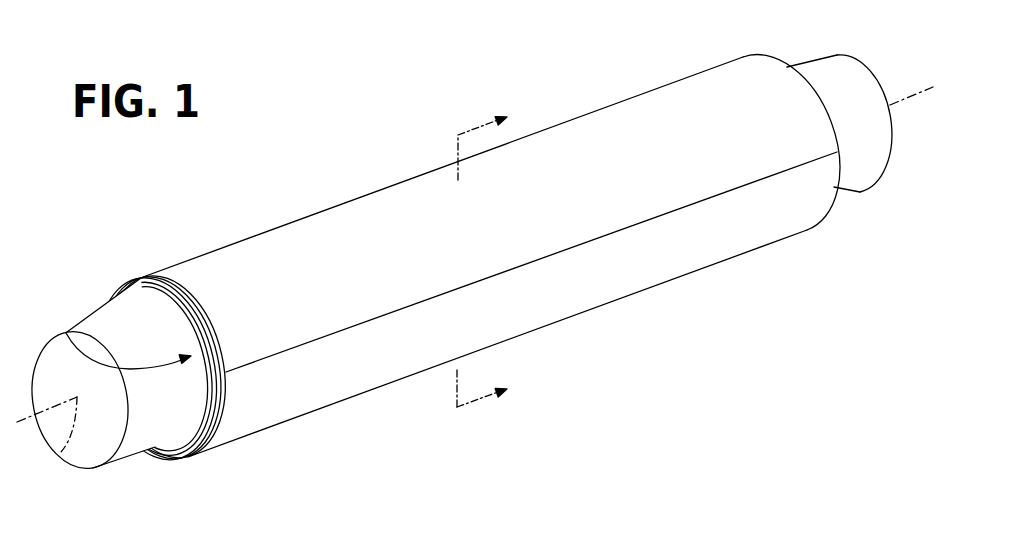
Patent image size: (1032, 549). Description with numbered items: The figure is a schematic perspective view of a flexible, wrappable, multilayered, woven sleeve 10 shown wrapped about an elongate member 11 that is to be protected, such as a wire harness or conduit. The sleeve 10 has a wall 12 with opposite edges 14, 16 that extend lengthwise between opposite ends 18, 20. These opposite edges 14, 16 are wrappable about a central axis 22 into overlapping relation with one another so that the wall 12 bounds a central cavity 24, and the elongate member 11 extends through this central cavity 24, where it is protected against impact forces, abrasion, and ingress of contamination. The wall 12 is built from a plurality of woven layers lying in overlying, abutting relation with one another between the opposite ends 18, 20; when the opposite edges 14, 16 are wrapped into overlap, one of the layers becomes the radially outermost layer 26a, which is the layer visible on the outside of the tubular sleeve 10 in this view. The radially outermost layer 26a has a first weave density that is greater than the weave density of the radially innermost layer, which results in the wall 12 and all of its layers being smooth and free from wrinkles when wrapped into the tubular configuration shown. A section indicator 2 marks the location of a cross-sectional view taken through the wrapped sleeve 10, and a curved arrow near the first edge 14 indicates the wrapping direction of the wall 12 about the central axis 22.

The sleeve 10 is at (454, 271).
The elongate member 11 is at (833, 68).
The wall 12 is at (572, 289).
The opposite edge 14 is at (210, 339).
The opposite edge 16 is at (272, 357).
The opposite end 18 is at (217, 393).
The opposite end 20 is at (851, 193).
The central axis 22 is at (61, 452).
The central cavity 24 is at (66, 333).
The radially outermost layer 26a is at (320, 263).
The section line 2- 2 is at (482, 267).